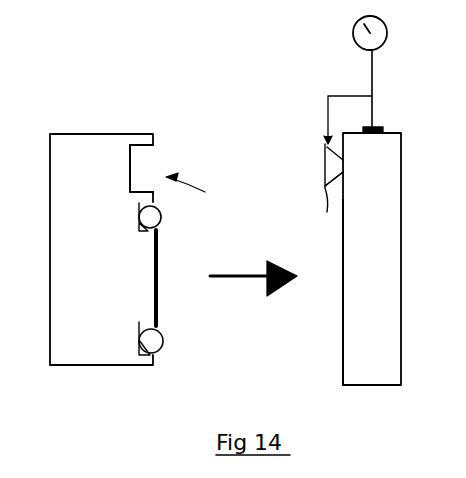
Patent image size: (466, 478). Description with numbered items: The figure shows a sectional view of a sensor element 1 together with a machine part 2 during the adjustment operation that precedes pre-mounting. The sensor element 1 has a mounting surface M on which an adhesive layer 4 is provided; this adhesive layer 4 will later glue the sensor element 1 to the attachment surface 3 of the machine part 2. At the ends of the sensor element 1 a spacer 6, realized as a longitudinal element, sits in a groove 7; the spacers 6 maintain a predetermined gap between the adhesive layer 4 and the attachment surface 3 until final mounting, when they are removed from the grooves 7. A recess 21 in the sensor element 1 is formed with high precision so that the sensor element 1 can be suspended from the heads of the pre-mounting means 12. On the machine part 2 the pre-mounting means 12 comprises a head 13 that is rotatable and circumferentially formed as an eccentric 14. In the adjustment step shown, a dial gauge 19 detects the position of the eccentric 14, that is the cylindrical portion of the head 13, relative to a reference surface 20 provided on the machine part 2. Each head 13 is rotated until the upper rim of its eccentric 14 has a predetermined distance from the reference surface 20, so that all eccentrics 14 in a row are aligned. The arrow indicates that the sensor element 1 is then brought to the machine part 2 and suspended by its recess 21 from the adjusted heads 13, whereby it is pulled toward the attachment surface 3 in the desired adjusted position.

The sensor element 1 is at (50, 340).
The machine part 2 is at (401, 190).
The attachment surface 3 is at (343, 320).
The adhesive layer 4 is at (160, 303).
The spacer 6 is at (158, 350).
The groove 7 is at (138, 321).
The pre-mounting means 12 is at (200, 187).
The head 13 is at (326, 178).
The eccentric 14 is at (326, 206).
The dial gauge 19 is at (388, 34).
The reference surface 20 is at (388, 128).
The recess 21 is at (145, 147).
The mounting surface M is at (160, 228).